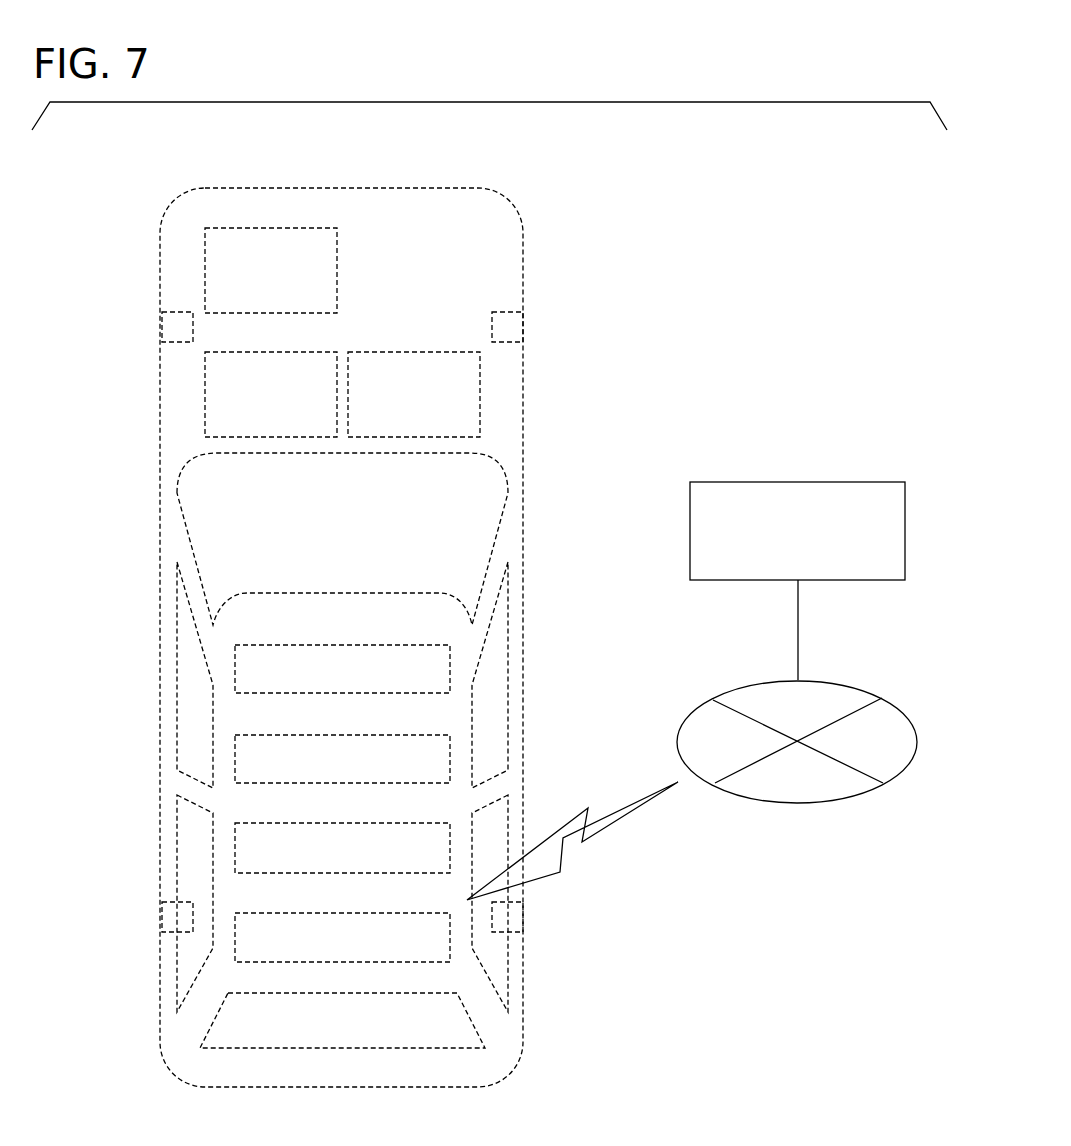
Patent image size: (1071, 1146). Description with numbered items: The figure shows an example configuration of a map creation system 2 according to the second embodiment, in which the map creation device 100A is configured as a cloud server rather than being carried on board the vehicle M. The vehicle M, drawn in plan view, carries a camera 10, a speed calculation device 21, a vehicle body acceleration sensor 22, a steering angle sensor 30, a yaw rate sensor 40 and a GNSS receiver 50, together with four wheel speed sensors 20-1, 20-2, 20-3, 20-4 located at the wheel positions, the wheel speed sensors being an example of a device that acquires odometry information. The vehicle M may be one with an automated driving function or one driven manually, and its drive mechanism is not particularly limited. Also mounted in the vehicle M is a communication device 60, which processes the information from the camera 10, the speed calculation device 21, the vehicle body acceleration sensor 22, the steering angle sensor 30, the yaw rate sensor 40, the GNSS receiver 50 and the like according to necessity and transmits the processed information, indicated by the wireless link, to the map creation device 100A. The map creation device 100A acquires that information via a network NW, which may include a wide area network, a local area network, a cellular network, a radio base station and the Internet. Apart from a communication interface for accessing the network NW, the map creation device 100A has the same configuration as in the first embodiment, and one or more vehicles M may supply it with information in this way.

The map creation system 2 is at (805, 156).
The vehicle M is at (343, 187).
The camera 10 is at (395, 645).
The speed calculation device 21 is at (285, 350).
The vehicle body acceleration sensor 22 is at (285, 226).
The steering angle sensor 30 is at (427, 350).
The yaw rate sensor 40 is at (395, 735).
The GNSS receiver 50 is at (395, 823).
The communication device 60 is at (395, 913).
The wheel speed sensor 20-1 is at (160, 325).
The wheel speed sensor 20-2 is at (525, 325).
The wheel speed sensor 20-3 is at (160, 915).
The wheel speed sensor 20-4 is at (525, 913).
The map creation device 100A is at (828, 481).
The network NW is at (843, 680).